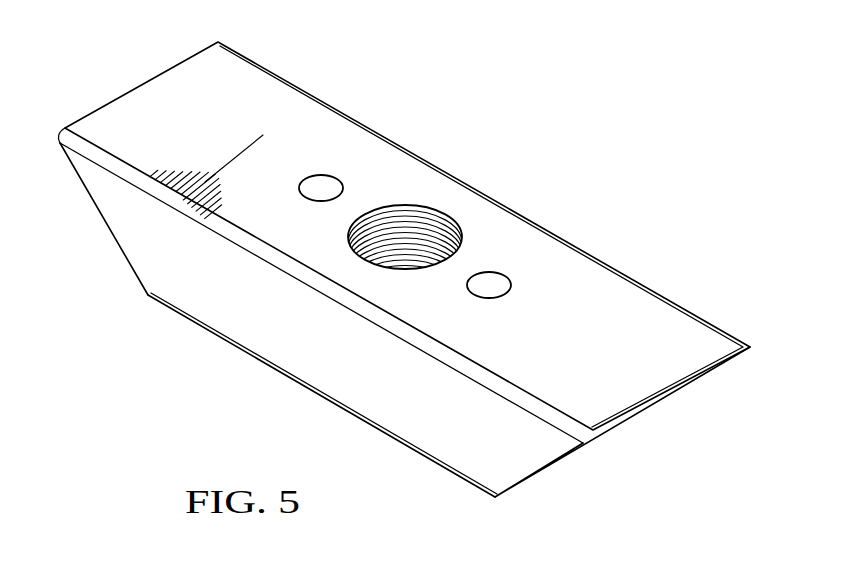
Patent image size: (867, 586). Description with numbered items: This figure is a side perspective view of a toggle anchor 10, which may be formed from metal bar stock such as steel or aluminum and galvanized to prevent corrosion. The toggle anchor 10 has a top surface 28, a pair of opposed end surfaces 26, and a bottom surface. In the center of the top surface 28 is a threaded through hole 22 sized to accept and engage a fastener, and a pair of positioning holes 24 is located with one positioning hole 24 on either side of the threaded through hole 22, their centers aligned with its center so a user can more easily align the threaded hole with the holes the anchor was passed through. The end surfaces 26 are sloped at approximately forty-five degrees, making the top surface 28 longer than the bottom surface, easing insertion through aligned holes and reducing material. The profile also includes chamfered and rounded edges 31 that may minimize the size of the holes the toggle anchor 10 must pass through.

The toggle anchor 10 is at (575, 128).
The threaded through hole 22 is at (413, 270).
The positioning holes 24 is at (325, 198).
The opposed end surfaces 26 is at (104, 221).
The top surface 28 is at (660, 313).
The chamfered and rounded edge 31 is at (331, 401).